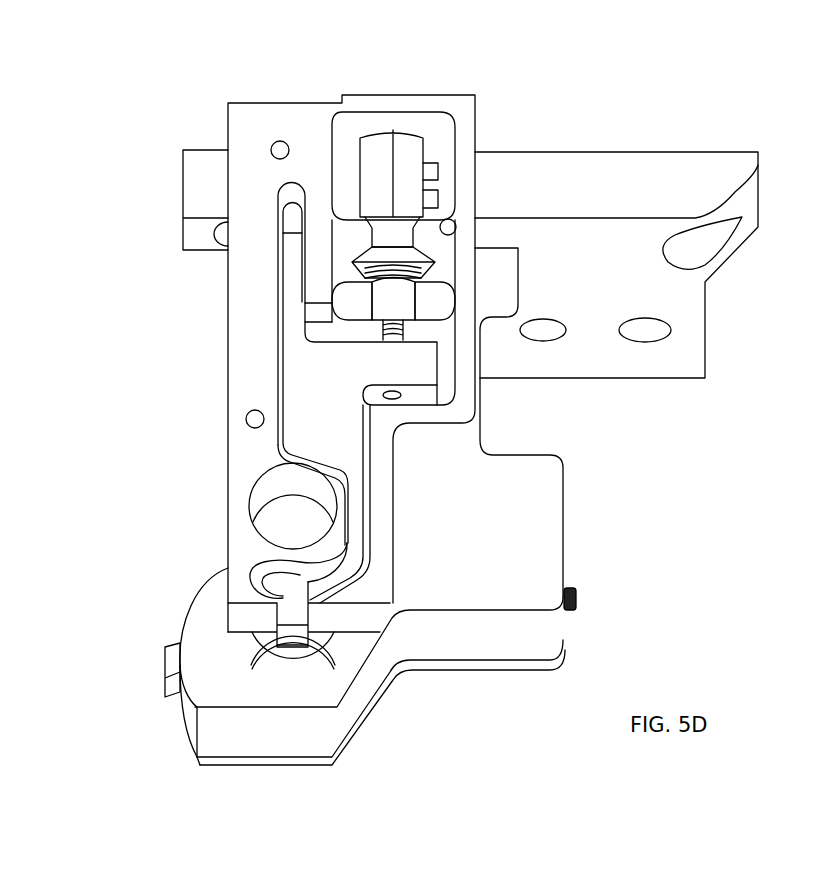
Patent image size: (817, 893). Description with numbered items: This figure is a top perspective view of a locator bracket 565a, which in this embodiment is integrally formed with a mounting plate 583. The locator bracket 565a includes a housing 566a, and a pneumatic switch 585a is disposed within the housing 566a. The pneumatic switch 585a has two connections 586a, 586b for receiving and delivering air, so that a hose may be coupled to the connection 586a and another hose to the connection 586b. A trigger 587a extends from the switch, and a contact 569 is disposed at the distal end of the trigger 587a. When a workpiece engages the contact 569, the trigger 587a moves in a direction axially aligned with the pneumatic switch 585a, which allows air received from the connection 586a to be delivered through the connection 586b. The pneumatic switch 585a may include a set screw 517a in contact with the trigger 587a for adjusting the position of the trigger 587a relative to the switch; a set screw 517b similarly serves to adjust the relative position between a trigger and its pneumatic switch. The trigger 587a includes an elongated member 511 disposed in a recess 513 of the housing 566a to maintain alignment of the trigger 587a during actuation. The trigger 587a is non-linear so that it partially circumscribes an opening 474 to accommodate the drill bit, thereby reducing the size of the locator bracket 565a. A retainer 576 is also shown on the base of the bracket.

The locator bracket 565a is at (265, 120).
The housing 566a is at (243, 370).
The pneumatic switch 585a is at (381, 165).
The connection 586a is at (445, 178).
The connection 586b is at (443, 210).
The mounting plate 583 is at (703, 178).
The recess 513 is at (290, 223).
The elongated member 511 is at (292, 287).
The trigger 587a is at (318, 380).
The opening 474 is at (282, 515).
The retainer 576 is at (165, 660).
The contact 569 is at (292, 605).
The set screw 517a is at (405, 322).
The set screw 517b is at (577, 600).